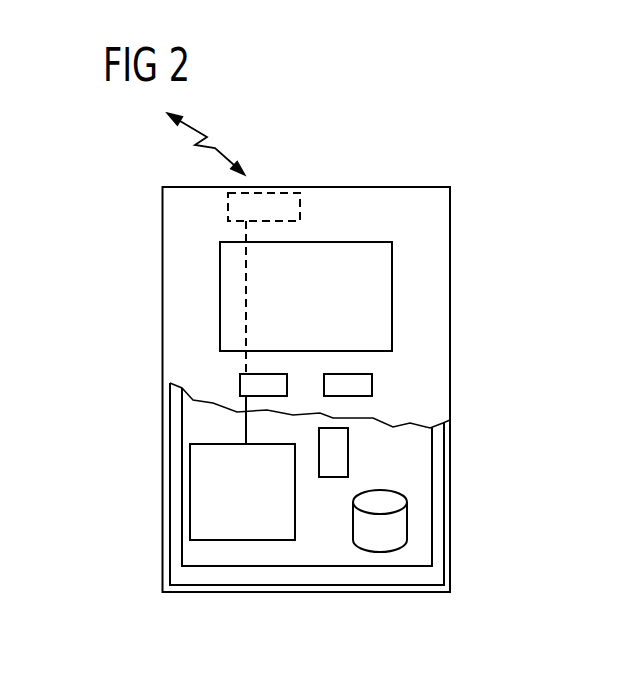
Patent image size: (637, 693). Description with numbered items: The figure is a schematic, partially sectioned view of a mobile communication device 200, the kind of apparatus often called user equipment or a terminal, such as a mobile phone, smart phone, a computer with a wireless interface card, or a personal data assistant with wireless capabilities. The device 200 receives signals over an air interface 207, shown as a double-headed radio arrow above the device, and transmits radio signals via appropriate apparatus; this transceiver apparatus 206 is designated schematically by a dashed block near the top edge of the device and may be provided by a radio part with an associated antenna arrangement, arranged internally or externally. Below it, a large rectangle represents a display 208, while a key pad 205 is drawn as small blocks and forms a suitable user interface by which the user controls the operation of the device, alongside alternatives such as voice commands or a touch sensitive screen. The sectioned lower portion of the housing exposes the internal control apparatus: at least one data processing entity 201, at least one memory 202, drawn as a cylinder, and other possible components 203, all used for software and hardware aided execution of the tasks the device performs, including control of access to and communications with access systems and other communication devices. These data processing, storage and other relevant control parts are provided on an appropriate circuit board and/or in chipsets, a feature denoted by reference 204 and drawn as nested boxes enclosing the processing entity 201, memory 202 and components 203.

The communication device 200 is at (303, 187).
The data processing entity 201 is at (190, 490).
The memory 202 is at (378, 552).
The other possible components 203 is at (348, 450).
The circuit board 204 is at (190, 553).
The key pad 205 is at (238, 382).
The transceiver apparatus 206 is at (300, 208).
The air interface 207 is at (200, 130).
The display 208 is at (220, 296).